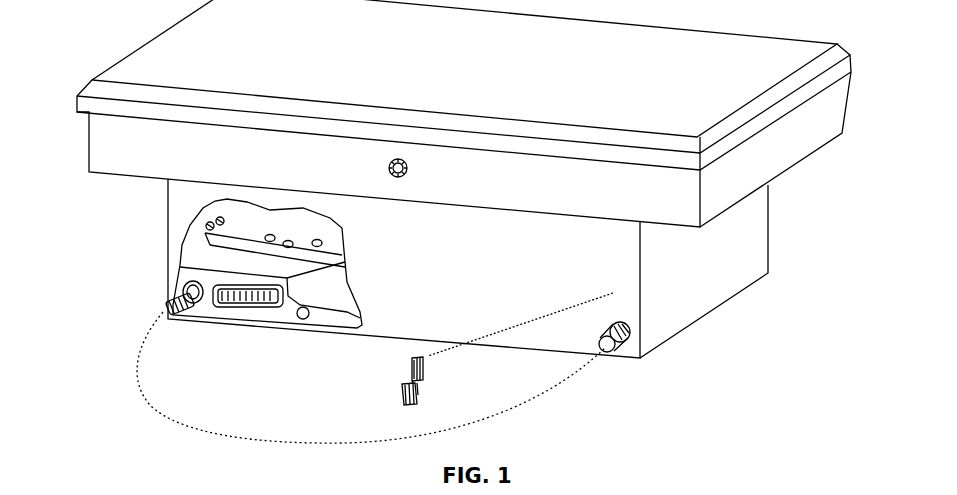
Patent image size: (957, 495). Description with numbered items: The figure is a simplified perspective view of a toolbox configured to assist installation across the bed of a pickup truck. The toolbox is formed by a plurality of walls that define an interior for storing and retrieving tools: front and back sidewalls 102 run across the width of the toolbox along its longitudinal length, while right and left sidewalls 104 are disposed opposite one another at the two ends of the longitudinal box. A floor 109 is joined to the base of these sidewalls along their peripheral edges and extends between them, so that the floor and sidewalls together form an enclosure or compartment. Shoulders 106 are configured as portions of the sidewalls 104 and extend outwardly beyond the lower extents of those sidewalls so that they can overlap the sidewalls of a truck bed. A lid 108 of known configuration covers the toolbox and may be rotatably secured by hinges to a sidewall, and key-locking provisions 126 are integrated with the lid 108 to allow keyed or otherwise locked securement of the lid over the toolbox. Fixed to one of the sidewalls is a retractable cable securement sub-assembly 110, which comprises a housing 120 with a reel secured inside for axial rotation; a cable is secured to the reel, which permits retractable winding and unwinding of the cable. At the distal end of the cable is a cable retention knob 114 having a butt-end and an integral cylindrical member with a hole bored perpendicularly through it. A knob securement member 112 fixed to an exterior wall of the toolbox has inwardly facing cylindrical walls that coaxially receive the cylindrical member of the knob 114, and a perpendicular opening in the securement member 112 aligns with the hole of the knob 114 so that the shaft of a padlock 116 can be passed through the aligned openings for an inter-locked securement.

The front and back sidewalls 102 is at (433, 272).
The right and left sidewalls 104 is at (704, 271).
The shoulders 106 is at (775, 149).
The lid 108 is at (387, 71).
The floor 109 is at (681, 334).
The retractable cable securement sub-assembly 110 is at (180, 262).
The knob securement member 112 is at (613, 293).
The cable retention knob 114 is at (175, 313).
The padlock 116 is at (419, 390).
The housing 120 is at (346, 266).
The key-locking provisions 126 is at (415, 178).